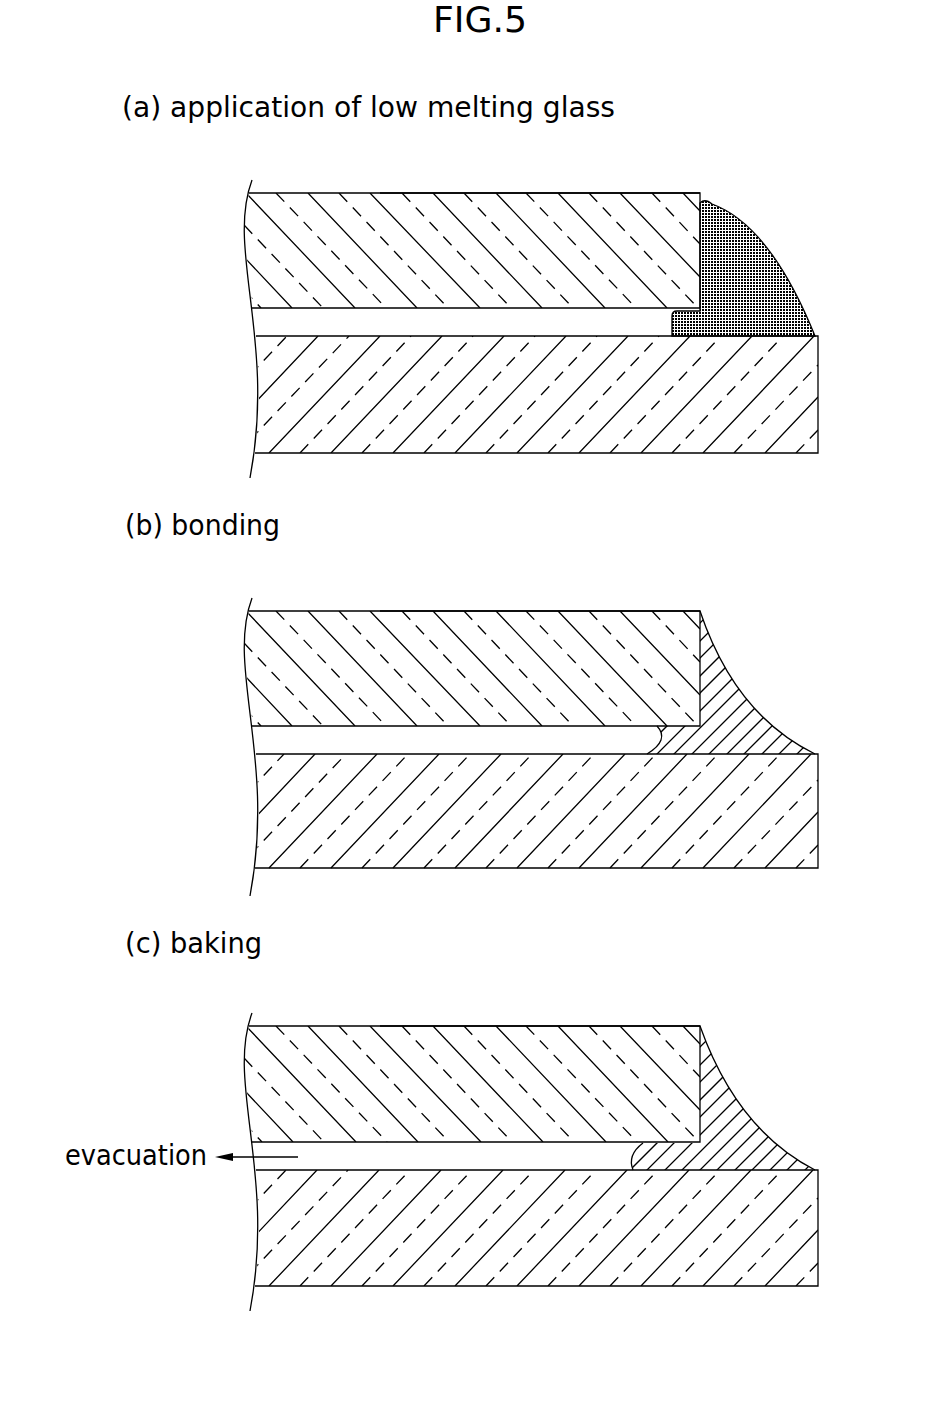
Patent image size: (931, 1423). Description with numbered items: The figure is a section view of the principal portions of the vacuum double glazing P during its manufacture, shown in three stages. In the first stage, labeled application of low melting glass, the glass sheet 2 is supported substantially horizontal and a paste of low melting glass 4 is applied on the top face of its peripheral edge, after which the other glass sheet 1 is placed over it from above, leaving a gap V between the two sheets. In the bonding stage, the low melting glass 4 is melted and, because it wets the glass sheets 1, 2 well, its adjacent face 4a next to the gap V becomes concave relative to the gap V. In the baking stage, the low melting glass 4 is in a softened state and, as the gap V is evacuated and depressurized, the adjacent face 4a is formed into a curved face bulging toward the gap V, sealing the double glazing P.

The glass sheet 1 is at (385, 194).
The glass sheet 2 is at (372, 453).
The low melting glass 4 is at (782, 276).
The adjacent face 4a is at (652, 756).
The gap V is at (409, 322).
The double glazing P is at (550, 191).